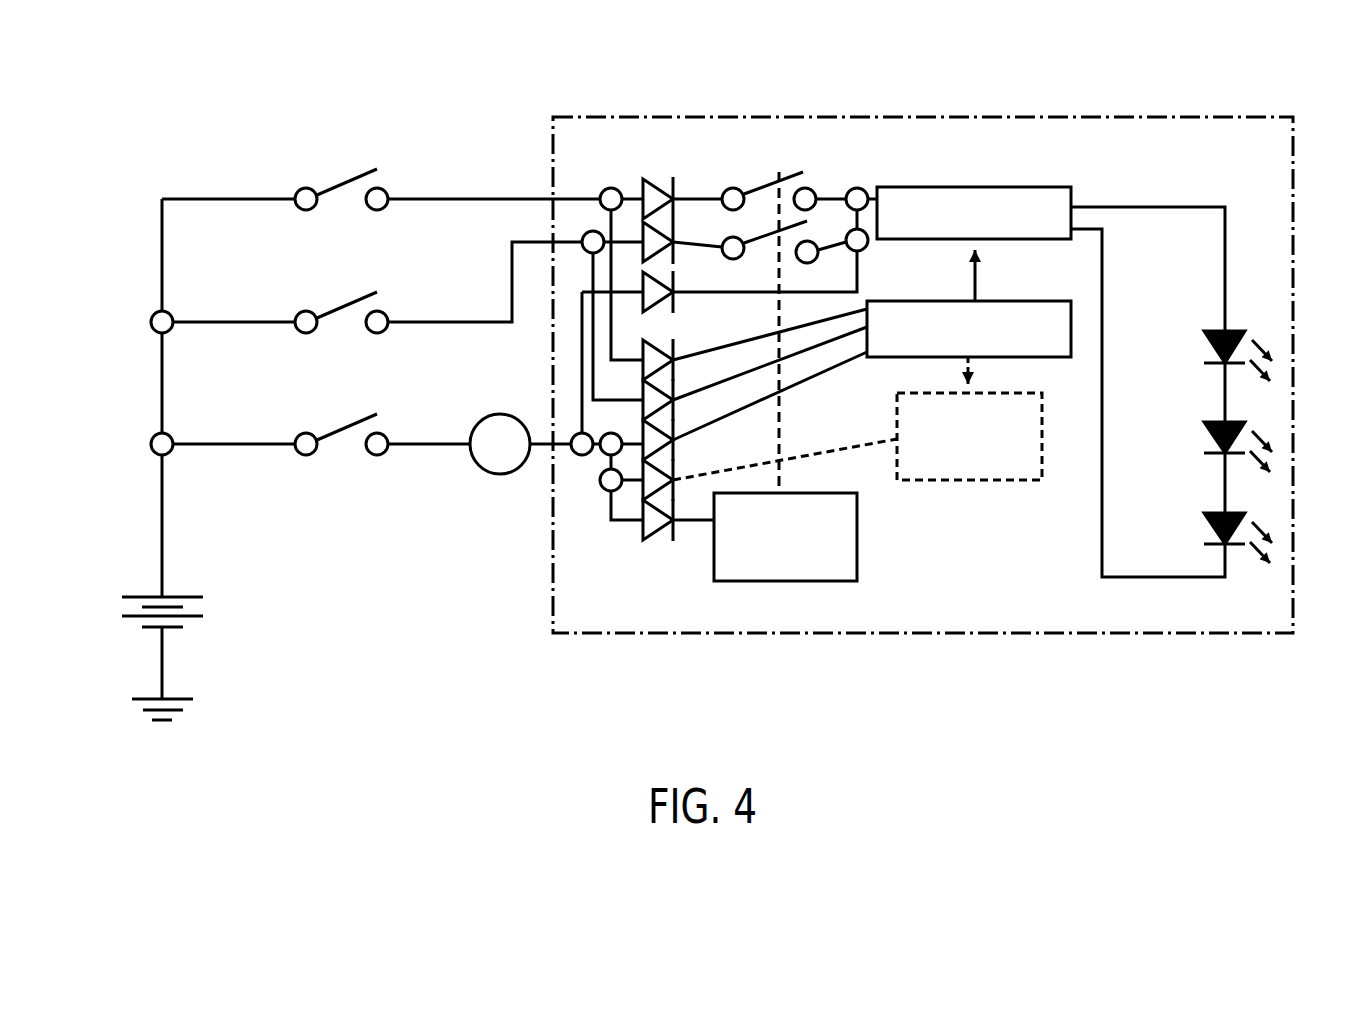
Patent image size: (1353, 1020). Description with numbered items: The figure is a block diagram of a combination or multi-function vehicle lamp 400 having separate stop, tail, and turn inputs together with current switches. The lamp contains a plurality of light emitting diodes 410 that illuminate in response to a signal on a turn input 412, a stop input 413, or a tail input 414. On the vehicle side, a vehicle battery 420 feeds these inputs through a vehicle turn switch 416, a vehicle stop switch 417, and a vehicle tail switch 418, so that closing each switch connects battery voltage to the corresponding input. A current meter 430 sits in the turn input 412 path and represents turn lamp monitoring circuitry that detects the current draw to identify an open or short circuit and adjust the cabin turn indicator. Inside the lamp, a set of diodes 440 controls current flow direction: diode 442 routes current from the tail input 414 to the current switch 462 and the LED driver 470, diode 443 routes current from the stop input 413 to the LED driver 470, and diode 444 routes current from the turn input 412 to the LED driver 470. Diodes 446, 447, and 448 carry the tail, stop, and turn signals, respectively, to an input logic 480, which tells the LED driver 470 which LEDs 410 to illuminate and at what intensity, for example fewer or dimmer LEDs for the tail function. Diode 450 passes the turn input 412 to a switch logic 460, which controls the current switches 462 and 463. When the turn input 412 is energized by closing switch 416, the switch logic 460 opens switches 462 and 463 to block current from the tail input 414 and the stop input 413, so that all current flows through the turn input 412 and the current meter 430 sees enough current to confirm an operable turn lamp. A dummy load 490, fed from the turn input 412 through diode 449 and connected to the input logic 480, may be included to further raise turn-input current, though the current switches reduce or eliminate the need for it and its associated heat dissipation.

The vehicle lamp 400 is at (1122, 117).
The light emitting diodes 410 is at (1247, 314).
The turn input 412 is at (425, 443).
The stop input 413 is at (452, 320).
The tail input 414 is at (470, 197).
The vehicle turn switch 416 is at (330, 416).
The vehicle stop switch 417 is at (335, 294).
The vehicle tail switch 418 is at (335, 170).
The vehicle battery 420 is at (140, 575).
The current meter 430 is at (486, 416).
The diodes 440 is at (695, 191).
The diode 442 is at (655, 182).
The diode 443 is at (653, 228).
The diode 444 is at (653, 278).
The diode 446 is at (655, 346).
The diode 447 is at (655, 386).
The diode 448 is at (655, 426).
The diode 449 is at (670, 471).
The diode 450 is at (677, 459).
The switch logic 460 is at (857, 533).
The current switch 462 is at (808, 165).
The current switch 463 is at (758, 226).
The LED driver 470 is at (1071, 200).
The input logic 480 is at (1071, 328).
The dummy load 490 is at (1042, 432).